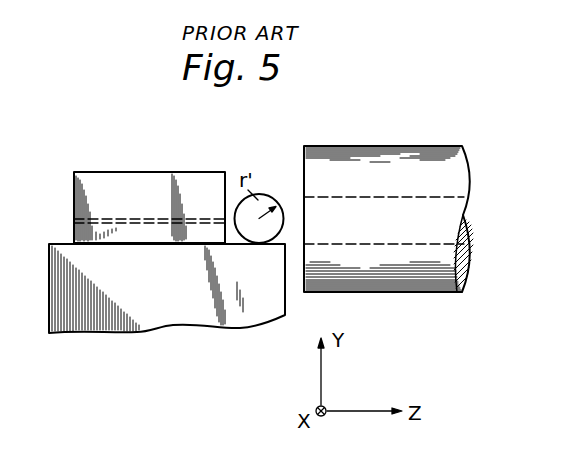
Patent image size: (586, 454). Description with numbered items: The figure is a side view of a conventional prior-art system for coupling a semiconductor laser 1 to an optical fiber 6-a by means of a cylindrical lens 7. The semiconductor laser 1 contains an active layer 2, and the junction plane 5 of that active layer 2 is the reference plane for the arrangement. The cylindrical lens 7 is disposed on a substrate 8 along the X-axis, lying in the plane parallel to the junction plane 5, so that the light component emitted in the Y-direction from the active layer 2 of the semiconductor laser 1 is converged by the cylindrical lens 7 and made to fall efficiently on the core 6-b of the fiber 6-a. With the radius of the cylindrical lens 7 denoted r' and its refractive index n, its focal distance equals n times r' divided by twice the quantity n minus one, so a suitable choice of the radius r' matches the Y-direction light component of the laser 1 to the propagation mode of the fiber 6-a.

The semiconductor laser 1 is at (187, 174).
The active layer 2 is at (137, 215).
The junction plane 5 is at (102, 219).
The cylindrical lens 7 is at (275, 205).
The substrate 8 is at (173, 327).
The fiber 6-a is at (423, 144).
The core 6-b is at (466, 216).